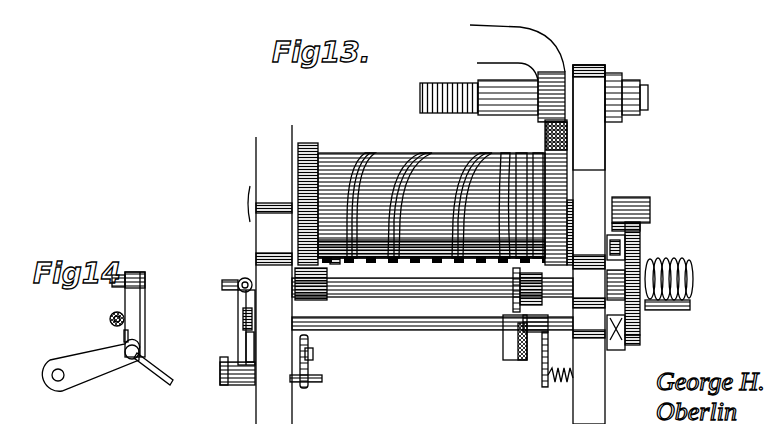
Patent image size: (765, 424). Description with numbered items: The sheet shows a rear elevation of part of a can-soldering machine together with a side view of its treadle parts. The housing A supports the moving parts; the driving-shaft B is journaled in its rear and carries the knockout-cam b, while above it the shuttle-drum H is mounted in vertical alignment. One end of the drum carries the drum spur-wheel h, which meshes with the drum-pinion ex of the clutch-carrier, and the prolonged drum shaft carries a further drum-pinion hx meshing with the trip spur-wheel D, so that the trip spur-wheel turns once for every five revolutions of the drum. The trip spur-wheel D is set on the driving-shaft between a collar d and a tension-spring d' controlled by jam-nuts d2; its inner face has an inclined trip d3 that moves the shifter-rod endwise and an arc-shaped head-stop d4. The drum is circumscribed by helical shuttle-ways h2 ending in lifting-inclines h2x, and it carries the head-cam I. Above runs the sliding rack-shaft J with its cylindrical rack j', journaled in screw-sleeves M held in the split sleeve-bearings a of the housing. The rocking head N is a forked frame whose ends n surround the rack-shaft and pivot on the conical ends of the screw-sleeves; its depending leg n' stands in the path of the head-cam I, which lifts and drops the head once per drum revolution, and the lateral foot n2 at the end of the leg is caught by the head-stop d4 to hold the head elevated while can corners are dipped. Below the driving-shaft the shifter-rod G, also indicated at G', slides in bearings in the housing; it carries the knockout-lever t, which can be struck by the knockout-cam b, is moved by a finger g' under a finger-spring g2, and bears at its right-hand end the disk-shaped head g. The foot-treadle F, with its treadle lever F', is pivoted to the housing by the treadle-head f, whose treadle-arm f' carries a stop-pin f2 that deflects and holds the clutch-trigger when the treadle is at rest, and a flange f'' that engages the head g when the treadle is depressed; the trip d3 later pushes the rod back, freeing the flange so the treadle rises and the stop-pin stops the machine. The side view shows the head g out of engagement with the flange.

In FIG. 13, the housing A is at (426, 244).
In FIG. 13, the drum spur-wheel h is at (306, 142).
In FIG. 13, the shuttle-drum H is at (467, 152).
In FIG. 13, the shuttle-way h2 is at (437, 205).
In FIG. 13, the lifting-incline h2x is at (343, 266).
In FIG. 13, the head-cam I is at (559, 192).
In FIG. 13, the sliding rack-shaft J is at (508, 97).
In FIG. 13, the cylindrical rack j' is at (449, 86).
In FIG. 13, the end of rocking head n is at (551, 97).
In FIG. 13, the depending leg n' is at (542, 136).
In FIG. 13, the rocking head N is at (517, 52).
In FIG. 13, the split sleeve-bearing a is at (592, 66).
In FIG. 13, the screw-sleeve M is at (632, 72).
In FIG. 13, the drum-pinion hx is at (630, 197).
In FIG. 13, the trip spur-wheel D is at (641, 256).
In FIG. 13, the lateral foot n2 is at (641, 229).
In FIG. 13, the collar d is at (616, 267).
In FIG. 13, the jam-nuts d2 is at (690, 272).
In FIG. 13, the tension-spring d' is at (667, 323).
In FIG. 13, the head-stop d4 is at (634, 350).
In FIG. 13, the trip d3 is at (620, 350).
In FIG. 13, the driving-shaft B is at (432, 279).
In FIG. 13, the shifter-rod G' is at (432, 333).
In FIG. 13, the drum-pinion ex is at (309, 300).
In FIG. 13, the knockout-cam b is at (496, 305).
In FIG. 13, the knockout-lever t is at (510, 350).
In FIG. 13, the finger g' is at (546, 351).
In FIG. 13, the finger-spring g2 is at (562, 383).
In FIG. 13, the foot-treadle F is at (309, 361).
In FIG. 13, the treadle-head f is at (229, 337).
In FIG. 14, the treadle-head f is at (90, 365).
In FIG. 13, the stop-pin f2 is at (242, 292).
In FIG. 14, the stop-pin f2 is at (145, 293).
In FIG. 13, the disk-shaped head g is at (235, 322).
In FIG. 14, the disk-shaped head g is at (109, 309).
In FIG. 13, the treadle-arm f' is at (238, 347).
In FIG. 14, the treadle-arm f' is at (150, 314).
In FIG. 14, the shifter-rod G is at (100, 323).
In FIG. 14, the flange f'' is at (112, 335).
In FIG. 14, the treadle lever F' is at (160, 369).